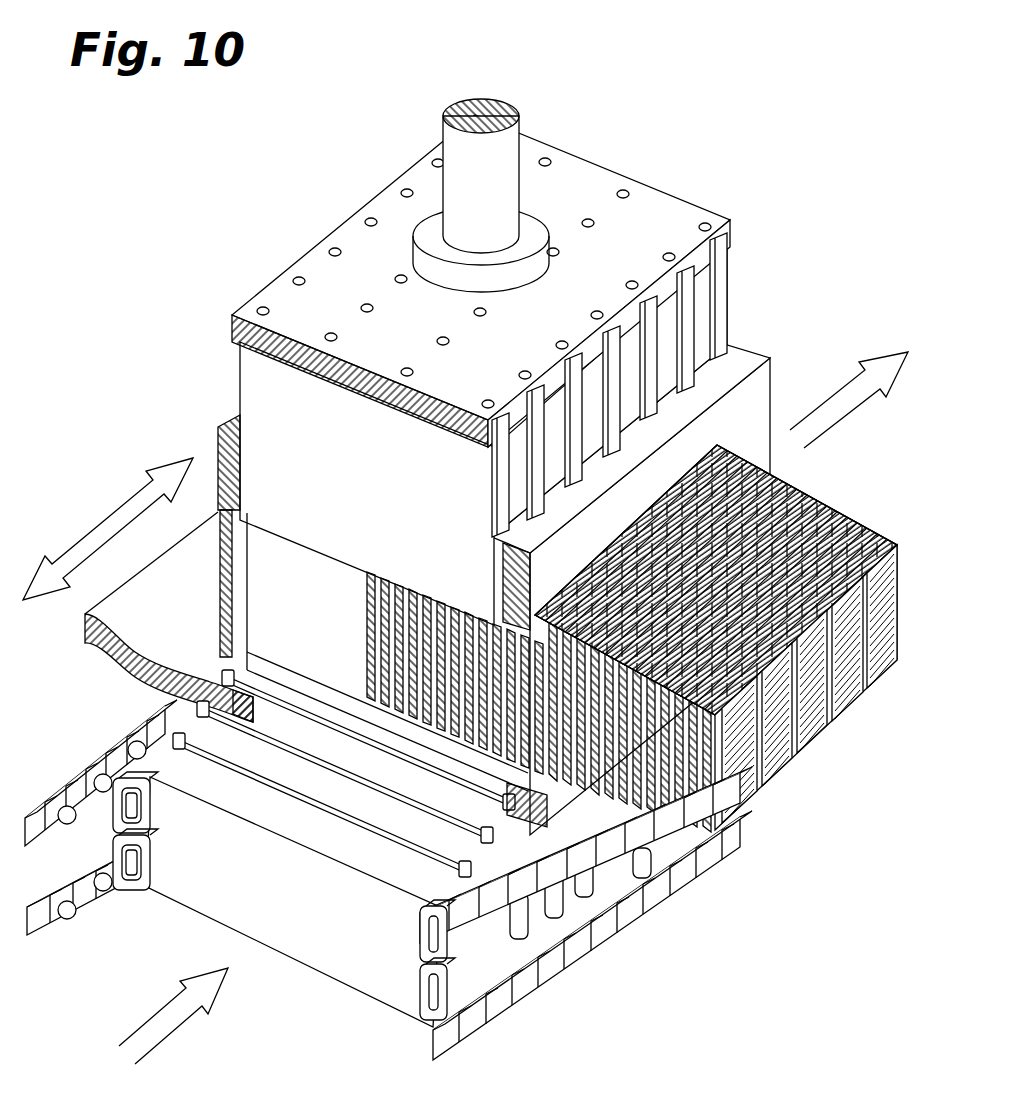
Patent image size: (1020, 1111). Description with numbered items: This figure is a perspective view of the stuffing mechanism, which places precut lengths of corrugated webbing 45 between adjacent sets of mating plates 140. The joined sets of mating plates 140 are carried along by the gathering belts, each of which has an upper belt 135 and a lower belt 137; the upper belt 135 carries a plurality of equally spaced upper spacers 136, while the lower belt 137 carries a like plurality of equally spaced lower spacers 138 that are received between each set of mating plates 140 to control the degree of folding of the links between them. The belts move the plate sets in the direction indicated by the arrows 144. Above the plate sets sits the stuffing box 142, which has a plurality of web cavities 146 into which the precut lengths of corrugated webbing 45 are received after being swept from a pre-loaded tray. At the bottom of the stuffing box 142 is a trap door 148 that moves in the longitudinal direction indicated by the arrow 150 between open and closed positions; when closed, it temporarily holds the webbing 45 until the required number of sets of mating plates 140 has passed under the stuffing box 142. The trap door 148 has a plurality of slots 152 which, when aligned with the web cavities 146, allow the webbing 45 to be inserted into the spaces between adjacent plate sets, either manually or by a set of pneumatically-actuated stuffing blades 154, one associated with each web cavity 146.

The corrugated webbing 45 is at (812, 520).
The upper belt 135 is at (70, 787).
The upper spacers 136 is at (73, 820).
The lower belt 137 is at (52, 890).
The lower spacers 138 is at (108, 893).
The sets of mating plates 140 is at (352, 933).
The stuffing box 142 is at (217, 438).
The arrows 144 is at (828, 400).
The web cavities 146 is at (680, 525).
The trap door 148 is at (140, 618).
The arrow 150 is at (110, 505).
The slots 152 is at (222, 672).
The stuffing blades 154 is at (650, 352).